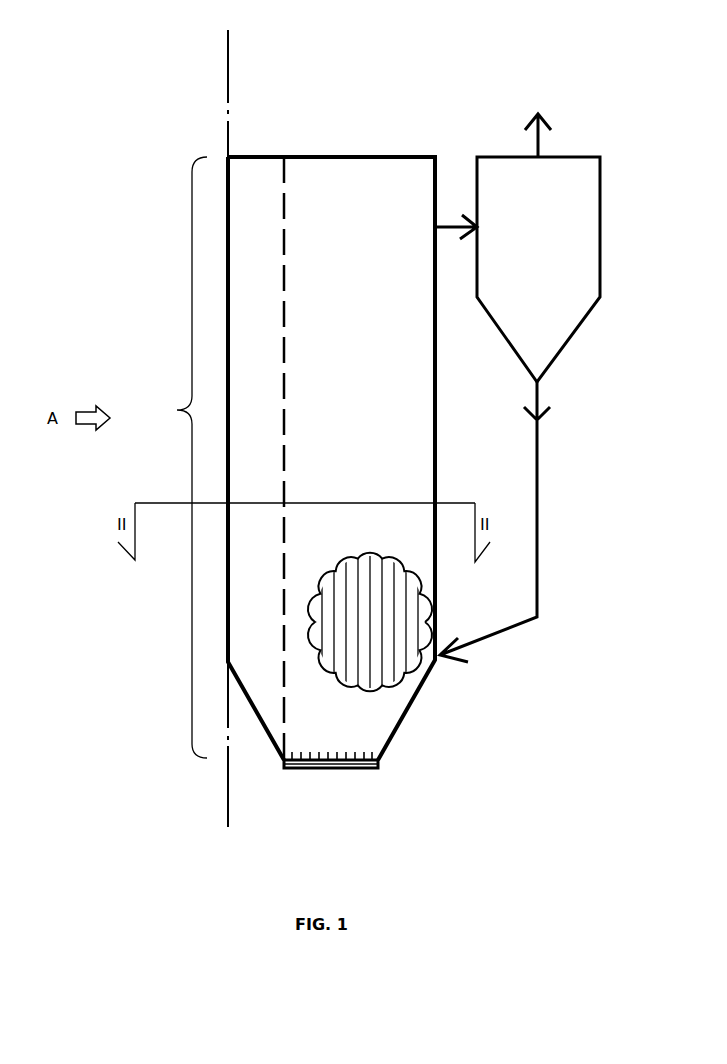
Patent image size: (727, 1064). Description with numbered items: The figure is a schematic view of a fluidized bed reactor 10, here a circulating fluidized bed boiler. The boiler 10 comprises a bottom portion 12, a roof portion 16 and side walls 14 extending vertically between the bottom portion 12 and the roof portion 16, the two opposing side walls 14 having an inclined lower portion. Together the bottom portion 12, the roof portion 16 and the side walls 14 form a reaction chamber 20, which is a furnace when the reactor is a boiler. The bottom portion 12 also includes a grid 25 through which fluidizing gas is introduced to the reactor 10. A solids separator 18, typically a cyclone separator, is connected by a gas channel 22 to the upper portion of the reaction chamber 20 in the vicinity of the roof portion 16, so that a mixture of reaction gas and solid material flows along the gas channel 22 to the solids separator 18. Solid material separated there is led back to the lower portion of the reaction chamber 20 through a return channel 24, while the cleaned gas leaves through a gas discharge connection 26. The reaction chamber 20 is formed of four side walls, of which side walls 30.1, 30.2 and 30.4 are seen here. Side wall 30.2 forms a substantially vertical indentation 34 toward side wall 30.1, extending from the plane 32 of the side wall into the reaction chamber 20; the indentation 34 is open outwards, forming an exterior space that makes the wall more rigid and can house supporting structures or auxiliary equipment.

The fluidized bed reactor 10 is at (314, 116).
The bottom portion 12 is at (284, 769).
The side walls 14 is at (175, 457).
The roof portion 16 is at (325, 157).
The solids separator 18 is at (538, 269).
The reaction chamber 20 is at (331, 458).
The gas channel 22 is at (458, 214).
The return channel 24 is at (540, 556).
The grid 25 is at (340, 762).
The gas discharge connection 26 is at (540, 143).
The side wall 30.1 is at (370, 625).
The side wall 30.2 is at (228, 580).
The side wall 30.4 is at (437, 583).
The plane of the side wall 32 is at (226, 102).
The indentation 34 is at (220, 309).